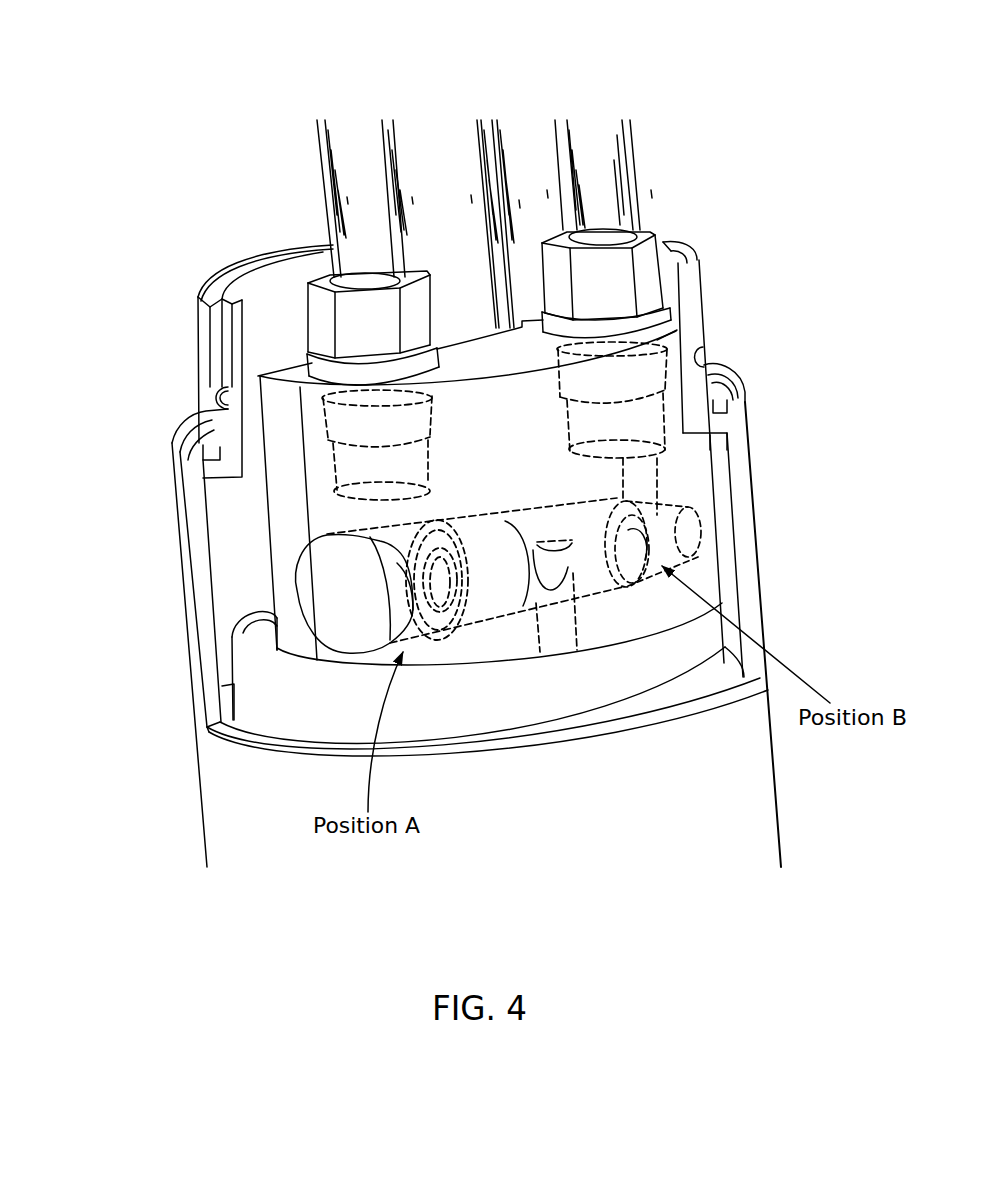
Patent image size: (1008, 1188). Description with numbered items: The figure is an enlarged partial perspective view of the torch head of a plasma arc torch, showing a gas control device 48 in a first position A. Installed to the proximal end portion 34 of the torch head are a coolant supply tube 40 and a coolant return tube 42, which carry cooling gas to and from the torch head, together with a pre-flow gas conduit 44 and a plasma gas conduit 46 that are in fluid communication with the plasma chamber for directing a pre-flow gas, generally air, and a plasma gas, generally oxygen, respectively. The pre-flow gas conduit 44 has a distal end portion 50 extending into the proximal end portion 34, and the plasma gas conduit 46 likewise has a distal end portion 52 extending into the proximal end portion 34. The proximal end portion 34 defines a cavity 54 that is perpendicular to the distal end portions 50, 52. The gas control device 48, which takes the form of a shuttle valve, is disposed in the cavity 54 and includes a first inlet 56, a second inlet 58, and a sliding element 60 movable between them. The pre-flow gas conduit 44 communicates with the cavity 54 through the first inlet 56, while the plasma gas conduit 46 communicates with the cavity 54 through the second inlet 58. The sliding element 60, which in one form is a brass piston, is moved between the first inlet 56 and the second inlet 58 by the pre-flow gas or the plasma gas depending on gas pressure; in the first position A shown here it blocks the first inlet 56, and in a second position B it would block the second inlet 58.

The proximal end portion 34 is at (172, 607).
The coolant supply tube 40 is at (442, 122).
The coolant return tube 42 is at (530, 124).
The pre-flow gas conduit 44 is at (312, 204).
The plasma gas conduit 46 is at (645, 181).
The gas control device 48 is at (433, 668).
The distal end portion 50 is at (340, 481).
The distal end portion 52 is at (667, 437).
The cavity 54 is at (340, 618).
The first inlet 56 is at (410, 589).
The second inlet 58 is at (626, 560).
The sliding element 60 is at (481, 596).